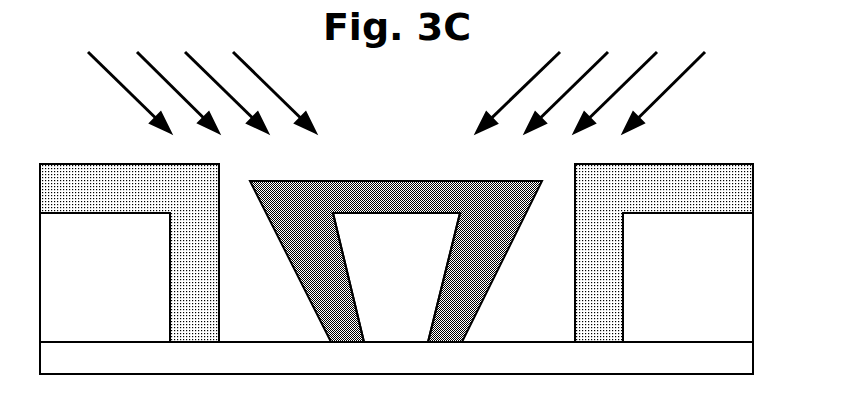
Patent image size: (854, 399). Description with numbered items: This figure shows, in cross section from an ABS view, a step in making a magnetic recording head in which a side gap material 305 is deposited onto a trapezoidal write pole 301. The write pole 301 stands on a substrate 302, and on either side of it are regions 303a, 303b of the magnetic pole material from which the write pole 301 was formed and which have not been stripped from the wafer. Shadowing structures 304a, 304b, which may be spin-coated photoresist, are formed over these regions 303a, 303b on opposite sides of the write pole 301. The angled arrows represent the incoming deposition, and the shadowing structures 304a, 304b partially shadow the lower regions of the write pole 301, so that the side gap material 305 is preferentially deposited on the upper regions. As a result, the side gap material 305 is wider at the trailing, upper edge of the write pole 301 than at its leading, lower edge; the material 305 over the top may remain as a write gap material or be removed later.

The write pole 301 is at (396, 277).
The substrate 302 is at (396, 358).
The region of magnetic pole material 303a is at (105, 277).
The region of magnetic pole material 303b is at (688, 277).
The shadowing structure 304a is at (129, 253).
The shadowing structure 304b is at (664, 253).
The side gap material 305 is at (396, 235).